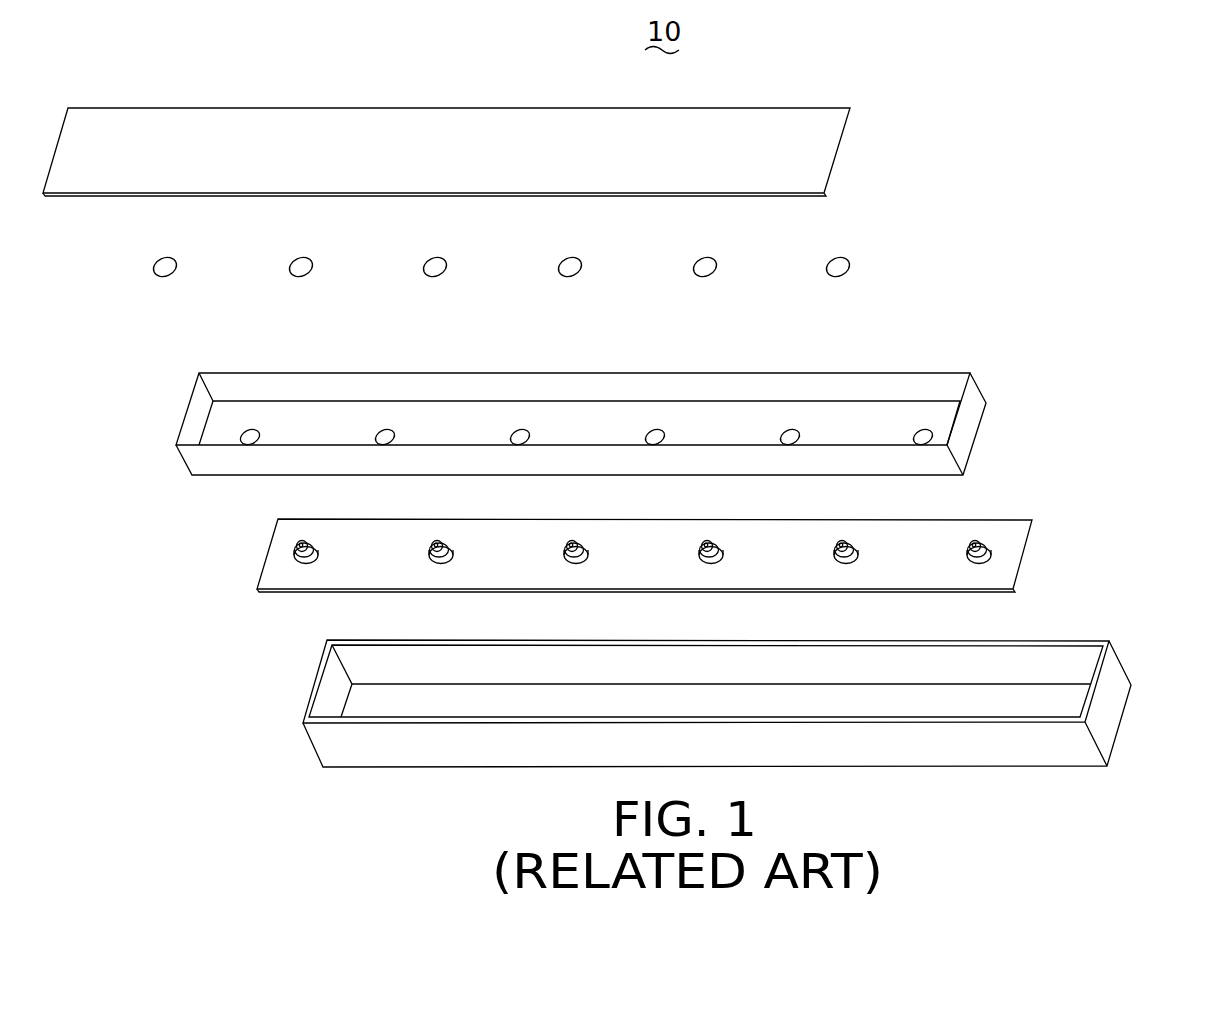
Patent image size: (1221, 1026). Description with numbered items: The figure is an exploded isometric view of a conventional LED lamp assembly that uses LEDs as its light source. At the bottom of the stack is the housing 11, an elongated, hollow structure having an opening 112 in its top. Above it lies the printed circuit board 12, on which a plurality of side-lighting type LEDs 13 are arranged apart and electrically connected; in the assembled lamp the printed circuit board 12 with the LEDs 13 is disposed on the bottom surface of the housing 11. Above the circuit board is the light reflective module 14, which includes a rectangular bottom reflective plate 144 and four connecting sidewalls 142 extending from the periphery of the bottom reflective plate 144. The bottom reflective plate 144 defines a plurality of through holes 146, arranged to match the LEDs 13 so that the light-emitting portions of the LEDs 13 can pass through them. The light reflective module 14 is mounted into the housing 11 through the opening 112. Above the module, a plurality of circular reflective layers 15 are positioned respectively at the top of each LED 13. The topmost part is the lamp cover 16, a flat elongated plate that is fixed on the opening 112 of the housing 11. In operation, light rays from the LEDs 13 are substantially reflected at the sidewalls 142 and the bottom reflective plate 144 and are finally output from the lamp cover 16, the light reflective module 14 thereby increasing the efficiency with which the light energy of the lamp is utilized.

The housing 11 is at (747, 683).
The opening 112 is at (1036, 667).
The printed circuit board 12 is at (1005, 550).
The side-lighting type LEDs 13 is at (990, 550).
The light reflective module 14 is at (631, 392).
The connecting sidewalls 142 is at (687, 392).
The bottom reflective plate 144 is at (888, 417).
The through holes 146 is at (790, 432).
The circular reflective layers 15 is at (840, 266).
The lamp cover 16 is at (795, 138).